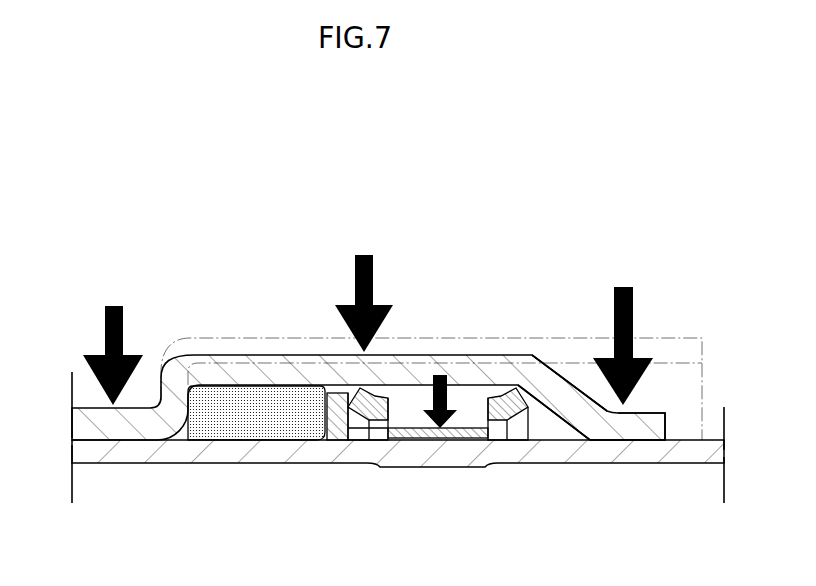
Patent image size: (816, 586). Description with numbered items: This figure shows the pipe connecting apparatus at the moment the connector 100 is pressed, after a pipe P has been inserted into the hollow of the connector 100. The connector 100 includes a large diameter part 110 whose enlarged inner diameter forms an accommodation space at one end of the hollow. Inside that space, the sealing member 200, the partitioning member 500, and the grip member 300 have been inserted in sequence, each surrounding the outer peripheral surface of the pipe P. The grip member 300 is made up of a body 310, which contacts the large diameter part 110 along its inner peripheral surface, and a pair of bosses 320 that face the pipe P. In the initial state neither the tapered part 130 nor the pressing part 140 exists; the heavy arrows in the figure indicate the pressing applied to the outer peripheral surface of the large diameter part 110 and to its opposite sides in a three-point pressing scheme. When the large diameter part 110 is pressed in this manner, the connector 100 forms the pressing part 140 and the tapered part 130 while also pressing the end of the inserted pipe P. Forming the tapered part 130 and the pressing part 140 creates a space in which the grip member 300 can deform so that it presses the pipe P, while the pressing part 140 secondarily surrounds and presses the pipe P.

The connector 100 is at (175, 346).
The large diameter part 110 is at (322, 370).
The tapered part 130 is at (558, 386).
The pressing part 140 is at (648, 428).
The sealing member 200 is at (227, 402).
The grip member 300 is at (442, 316).
The body 310 is at (465, 430).
The bosses 320 is at (508, 397).
The partitioning member 500 is at (302, 400).
The pipe P is at (460, 462).